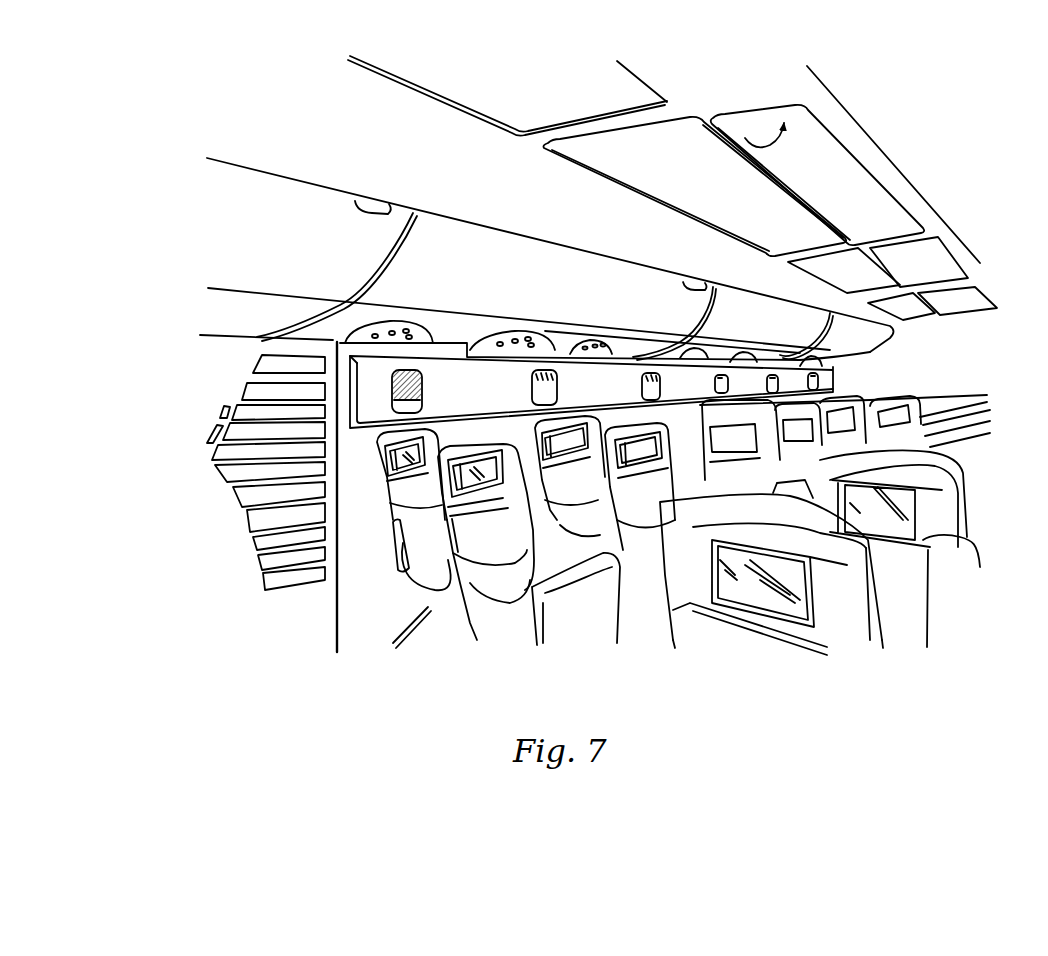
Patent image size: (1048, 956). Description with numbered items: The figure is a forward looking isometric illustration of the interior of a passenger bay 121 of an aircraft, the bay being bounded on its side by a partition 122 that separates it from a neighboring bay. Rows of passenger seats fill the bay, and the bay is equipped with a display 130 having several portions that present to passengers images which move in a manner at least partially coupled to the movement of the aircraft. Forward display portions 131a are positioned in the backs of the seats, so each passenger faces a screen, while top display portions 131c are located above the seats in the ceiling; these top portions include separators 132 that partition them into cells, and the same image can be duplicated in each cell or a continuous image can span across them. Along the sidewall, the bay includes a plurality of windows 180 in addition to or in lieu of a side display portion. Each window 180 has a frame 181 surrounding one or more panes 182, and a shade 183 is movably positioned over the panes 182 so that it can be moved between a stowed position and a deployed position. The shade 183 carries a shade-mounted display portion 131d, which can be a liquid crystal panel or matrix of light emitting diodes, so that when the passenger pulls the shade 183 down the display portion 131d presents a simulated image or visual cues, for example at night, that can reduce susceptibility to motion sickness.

The passenger bay 121 is at (637, 647).
The partition 122 is at (236, 369).
The display 130 is at (474, 336).
The forward display portion 131a is at (568, 452).
The top display portion 131c is at (673, 138).
The shade-mounted display portion 131d is at (553, 369).
The separator 132 is at (810, 193).
The window 180 is at (381, 387).
The frame 181 is at (422, 370).
The pane 182 is at (405, 410).
The shade 183 is at (406, 334).